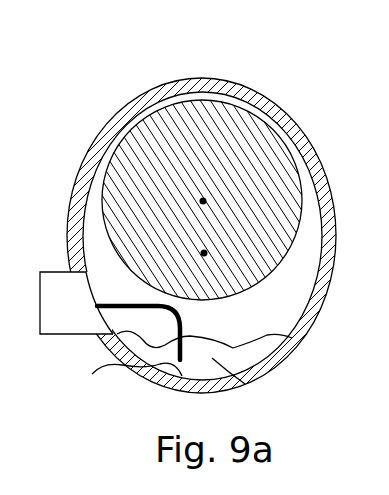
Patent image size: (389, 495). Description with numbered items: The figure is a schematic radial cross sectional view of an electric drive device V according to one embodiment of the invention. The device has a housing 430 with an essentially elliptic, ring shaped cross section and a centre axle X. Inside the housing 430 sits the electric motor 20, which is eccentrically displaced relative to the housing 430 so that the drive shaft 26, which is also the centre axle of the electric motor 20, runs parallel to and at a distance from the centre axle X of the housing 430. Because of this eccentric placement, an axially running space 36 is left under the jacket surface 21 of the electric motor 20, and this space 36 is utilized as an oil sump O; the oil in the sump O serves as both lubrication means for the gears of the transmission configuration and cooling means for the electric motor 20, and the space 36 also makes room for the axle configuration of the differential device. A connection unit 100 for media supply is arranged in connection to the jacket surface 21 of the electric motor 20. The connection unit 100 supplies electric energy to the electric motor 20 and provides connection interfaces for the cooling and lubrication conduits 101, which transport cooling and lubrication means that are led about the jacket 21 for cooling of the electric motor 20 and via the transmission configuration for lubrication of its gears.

The electric motor 20 is at (118, 146).
The jacket surface 21 is at (104, 204).
The housing 430 is at (282, 101).
The drive shaft 26 is at (204, 201).
The centre axle X is at (205, 253).
The axially running space 36 is at (245, 384).
The connection unit 100 is at (82, 335).
The cooling and lubrication conduit 101 is at (160, 356).
The oil sump O is at (92, 374).
The electric drive device V is at (173, 58).